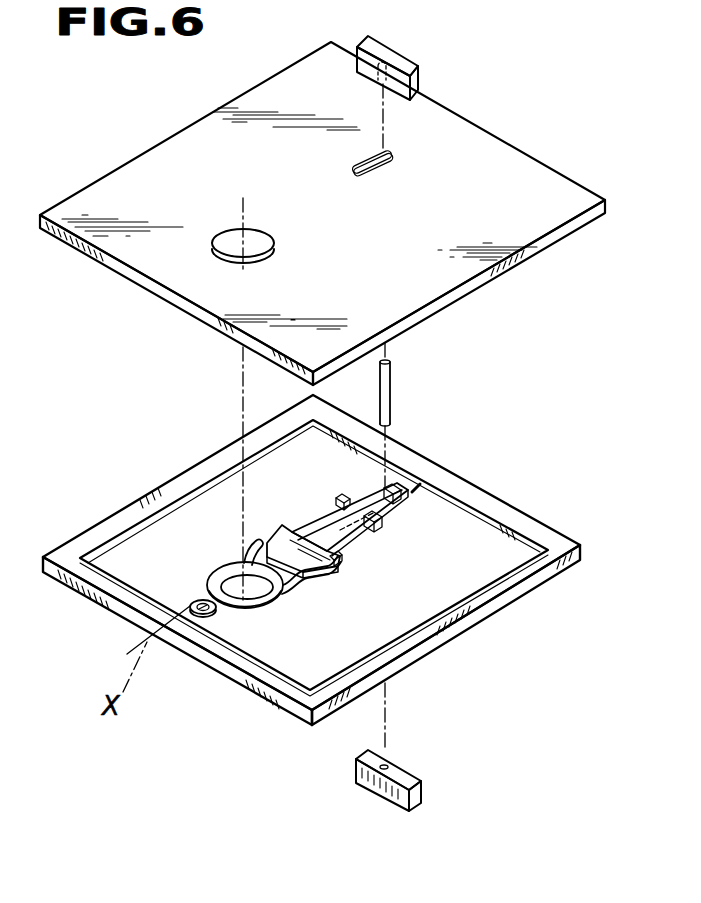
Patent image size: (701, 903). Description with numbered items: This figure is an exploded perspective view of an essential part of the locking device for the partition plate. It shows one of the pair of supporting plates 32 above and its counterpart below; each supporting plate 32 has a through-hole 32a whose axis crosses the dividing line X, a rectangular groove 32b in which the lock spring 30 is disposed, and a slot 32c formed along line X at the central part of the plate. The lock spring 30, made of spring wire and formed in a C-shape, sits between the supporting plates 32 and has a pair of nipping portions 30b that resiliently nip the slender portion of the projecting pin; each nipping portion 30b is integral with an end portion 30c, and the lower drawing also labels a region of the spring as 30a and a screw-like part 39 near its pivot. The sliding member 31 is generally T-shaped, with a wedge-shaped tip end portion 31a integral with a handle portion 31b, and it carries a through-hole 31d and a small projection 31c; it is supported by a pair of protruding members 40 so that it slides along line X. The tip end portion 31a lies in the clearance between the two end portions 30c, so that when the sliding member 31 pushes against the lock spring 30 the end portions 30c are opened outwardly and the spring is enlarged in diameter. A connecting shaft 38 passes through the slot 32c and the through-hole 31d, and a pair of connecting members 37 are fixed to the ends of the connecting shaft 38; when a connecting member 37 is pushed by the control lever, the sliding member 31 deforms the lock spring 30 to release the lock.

The lock spring 30 is at (233, 534).
The pivot portion of spring 30a is at (147, 661).
The nipping portions 30b is at (233, 565).
The end portions 30c is at (262, 543).
The sliding member 31 is at (397, 492).
The tip end portion 31a is at (281, 527).
The handle portion 31b is at (324, 523).
The projection on slider 31c is at (396, 486).
The through-hole 31d is at (400, 510).
The supporting plate 32 is at (570, 192).
The through-hole 32a is at (274, 240).
The rectangular groove 32b is at (455, 592).
The slot 32c is at (394, 152).
The connecting member 37 is at (418, 62).
The connecting shaft 38 is at (392, 378).
The screw 39 is at (190, 611).
The protruding members 40 is at (380, 520).